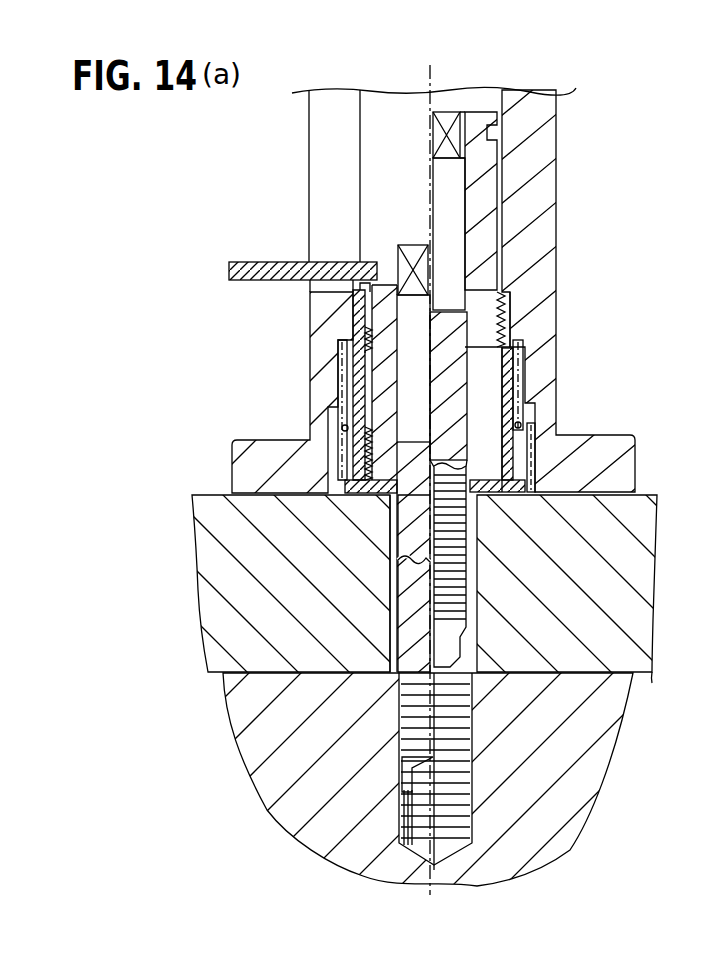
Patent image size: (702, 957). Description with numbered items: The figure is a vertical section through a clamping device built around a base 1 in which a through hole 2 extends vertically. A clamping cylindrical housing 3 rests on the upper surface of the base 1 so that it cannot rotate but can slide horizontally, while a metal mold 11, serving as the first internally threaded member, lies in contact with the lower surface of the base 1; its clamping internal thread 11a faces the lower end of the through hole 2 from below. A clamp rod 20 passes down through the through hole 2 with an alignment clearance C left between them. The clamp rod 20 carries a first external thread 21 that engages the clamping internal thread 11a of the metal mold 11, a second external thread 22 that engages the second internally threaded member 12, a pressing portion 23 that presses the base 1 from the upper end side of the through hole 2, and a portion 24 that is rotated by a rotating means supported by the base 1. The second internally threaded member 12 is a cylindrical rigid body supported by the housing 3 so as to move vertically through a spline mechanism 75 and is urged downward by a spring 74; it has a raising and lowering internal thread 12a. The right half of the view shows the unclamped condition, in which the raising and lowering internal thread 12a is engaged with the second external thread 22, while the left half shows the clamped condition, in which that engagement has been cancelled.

The base 1 is at (632, 598).
The through hole 2 is at (478, 573).
The clamping cylindrical housing 3 is at (558, 203).
The metal mold 11 is at (580, 780).
The clamping internal thread 11a is at (468, 752).
The second internally threaded member 12 is at (340, 377).
The raising and lowering internal thread 12a is at (365, 335).
The clamp rod 20 is at (393, 541).
The first external thread 21 is at (470, 612).
The second external thread 22 is at (512, 308).
The pressing portion 23 is at (392, 499).
The rotated portion 24 is at (404, 246).
The spring 74 is at (516, 427).
The spline mechanism 75 is at (544, 457).
The alignment clearance C is at (393, 587).